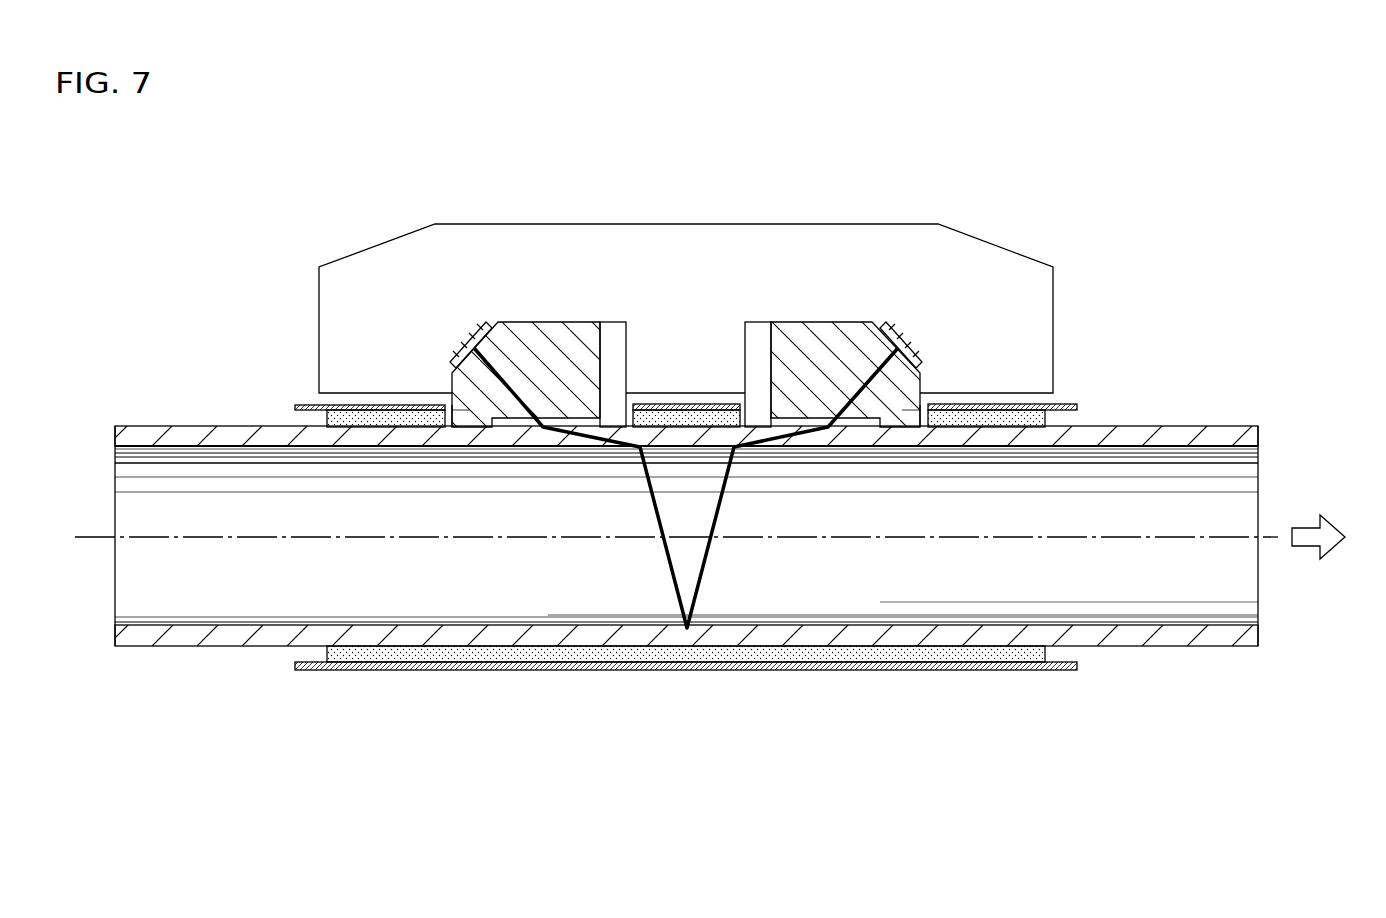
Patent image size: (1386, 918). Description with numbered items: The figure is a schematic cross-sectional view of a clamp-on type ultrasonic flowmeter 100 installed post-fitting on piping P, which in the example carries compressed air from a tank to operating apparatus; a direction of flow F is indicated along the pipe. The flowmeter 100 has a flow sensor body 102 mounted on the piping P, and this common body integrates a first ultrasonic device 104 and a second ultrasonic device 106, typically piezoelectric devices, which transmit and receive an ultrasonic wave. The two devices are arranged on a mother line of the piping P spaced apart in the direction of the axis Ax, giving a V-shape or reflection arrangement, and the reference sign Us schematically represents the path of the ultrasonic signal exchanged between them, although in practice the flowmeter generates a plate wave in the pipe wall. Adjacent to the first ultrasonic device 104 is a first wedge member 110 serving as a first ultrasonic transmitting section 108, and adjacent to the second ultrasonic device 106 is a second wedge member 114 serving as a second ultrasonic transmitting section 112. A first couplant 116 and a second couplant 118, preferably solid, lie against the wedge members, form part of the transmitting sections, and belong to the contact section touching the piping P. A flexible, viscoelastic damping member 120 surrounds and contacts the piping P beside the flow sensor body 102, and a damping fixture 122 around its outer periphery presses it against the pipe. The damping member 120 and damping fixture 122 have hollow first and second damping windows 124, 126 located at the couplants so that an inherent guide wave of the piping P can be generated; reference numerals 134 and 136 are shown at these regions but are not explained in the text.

The clamp-on type ultrasonic flowmeter 100 is at (278, 230).
The flow sensor body 102 is at (843, 224).
The first ultrasonic device 104 is at (409, 309).
The second ultrasonic device 106 is at (962, 309).
The first ultrasonic transmitting section 108 is at (396, 369).
The first wedge member 110 is at (465, 352).
The first couplant 116 is at (468, 380).
The second ultrasonic transmitting section 112 is at (975, 367).
The second wedge member 114 is at (903, 378).
The second couplant 118 is at (905, 392).
The damping member 120 is at (327, 419).
The damping fixture 122 is at (305, 407).
The first damping window 124 is at (450, 413).
The second damping window 126 is at (920, 418).
The first contact surface 134 is at (455, 410).
The second contact surface 136 is at (920, 408).
The piping P is at (1216, 440).
The axis Ax is at (170, 537).
The flow direction F is at (1305, 550).
The path of an ultrasonic signal Us is at (702, 580).